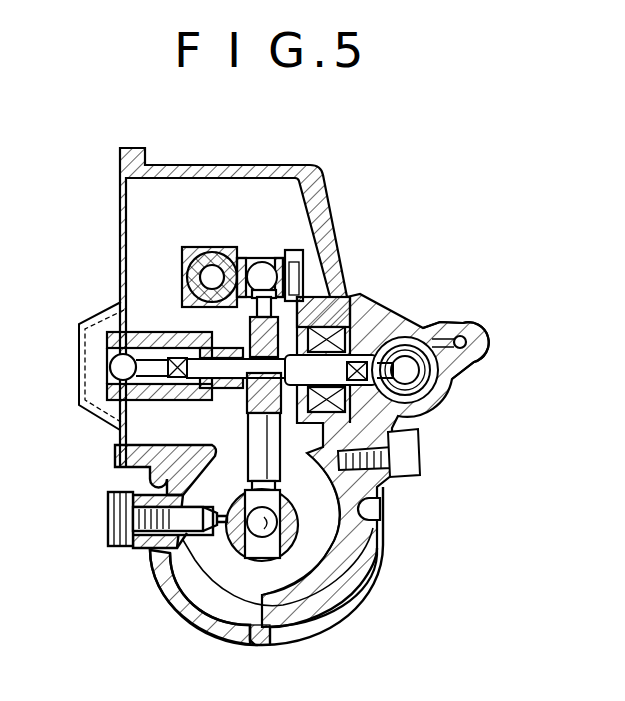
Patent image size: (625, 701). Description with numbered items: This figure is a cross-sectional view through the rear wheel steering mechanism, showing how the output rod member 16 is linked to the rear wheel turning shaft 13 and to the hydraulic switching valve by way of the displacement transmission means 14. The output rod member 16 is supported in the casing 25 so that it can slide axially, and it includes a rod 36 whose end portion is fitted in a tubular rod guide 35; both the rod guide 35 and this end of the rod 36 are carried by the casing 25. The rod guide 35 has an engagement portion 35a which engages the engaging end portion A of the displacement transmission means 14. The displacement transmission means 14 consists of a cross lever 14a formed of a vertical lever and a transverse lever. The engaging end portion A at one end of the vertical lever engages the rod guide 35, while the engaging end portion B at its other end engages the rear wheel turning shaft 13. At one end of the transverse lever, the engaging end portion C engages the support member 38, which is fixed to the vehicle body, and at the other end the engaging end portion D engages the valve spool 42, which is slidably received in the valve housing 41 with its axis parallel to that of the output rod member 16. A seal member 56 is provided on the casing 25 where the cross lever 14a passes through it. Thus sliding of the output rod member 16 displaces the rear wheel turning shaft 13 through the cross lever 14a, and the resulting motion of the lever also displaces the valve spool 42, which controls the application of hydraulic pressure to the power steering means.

The rear wheel turning shaft 13 is at (364, 577).
The displacement transmission means 14 is at (236, 430).
The cross lever 14a is at (380, 514).
The output rod member 16 is at (196, 222).
The casing 25 is at (320, 163).
The rod guide 35 is at (223, 252).
The engagement portion 35a is at (297, 240).
The rod 36 is at (182, 262).
The support member 38 is at (137, 332).
The valve housing 41 is at (393, 305).
The valve spool 42 is at (426, 322).
The seal member 56 is at (333, 297).
The engaging end portion A is at (262, 270).
The engaging end portion B is at (262, 545).
The engaging end portion C is at (112, 367).
The engaging end portion D is at (446, 405).